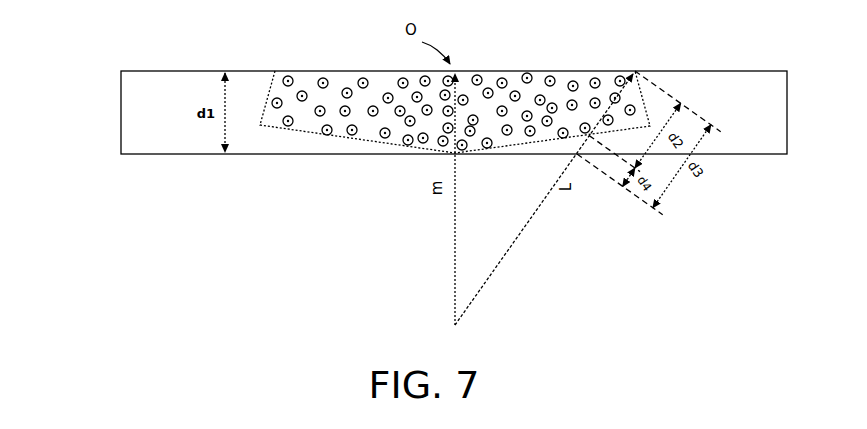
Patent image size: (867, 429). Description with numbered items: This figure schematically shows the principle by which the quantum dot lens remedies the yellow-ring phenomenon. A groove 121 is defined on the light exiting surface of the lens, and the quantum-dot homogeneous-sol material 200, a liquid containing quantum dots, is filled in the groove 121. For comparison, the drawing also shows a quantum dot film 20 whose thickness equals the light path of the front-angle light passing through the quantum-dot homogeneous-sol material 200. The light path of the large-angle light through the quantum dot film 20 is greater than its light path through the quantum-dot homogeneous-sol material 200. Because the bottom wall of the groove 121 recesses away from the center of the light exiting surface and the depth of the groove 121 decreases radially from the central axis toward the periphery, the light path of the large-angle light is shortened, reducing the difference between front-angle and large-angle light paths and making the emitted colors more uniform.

The quantum dot film 20 is at (121, 107).
The groove 121 is at (266, 85).
The quantum-dot homogeneous-sol material 200 is at (318, 77).